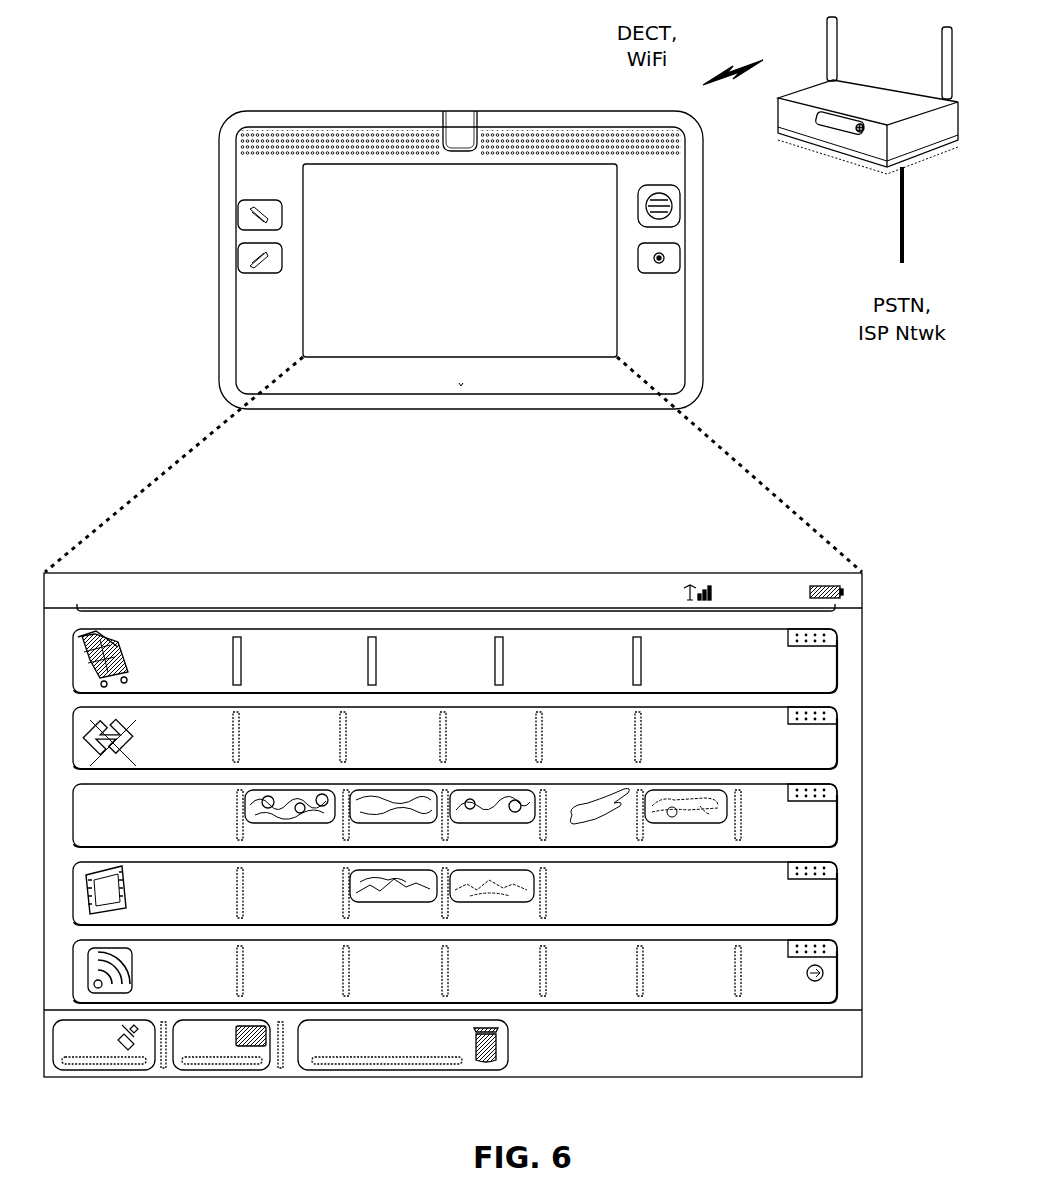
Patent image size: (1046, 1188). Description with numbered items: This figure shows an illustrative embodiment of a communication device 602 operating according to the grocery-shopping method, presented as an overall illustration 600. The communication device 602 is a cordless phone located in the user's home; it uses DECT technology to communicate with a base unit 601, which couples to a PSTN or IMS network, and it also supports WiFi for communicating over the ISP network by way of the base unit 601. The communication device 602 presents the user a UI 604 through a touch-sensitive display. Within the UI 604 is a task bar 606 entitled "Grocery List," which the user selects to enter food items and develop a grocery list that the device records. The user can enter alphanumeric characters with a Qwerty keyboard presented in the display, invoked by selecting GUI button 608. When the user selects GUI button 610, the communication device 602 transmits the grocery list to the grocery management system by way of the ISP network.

The graphical user interface home screen 600 is at (453, 825).
The base unit 601 is at (818, 135).
The communication device 602 is at (703, 298).
The UI 604 is at (335, 573).
The task bar 606 is at (168, 638).
The GUI button 608 is at (216, 1071).
The GUI button 610 is at (376, 1071).